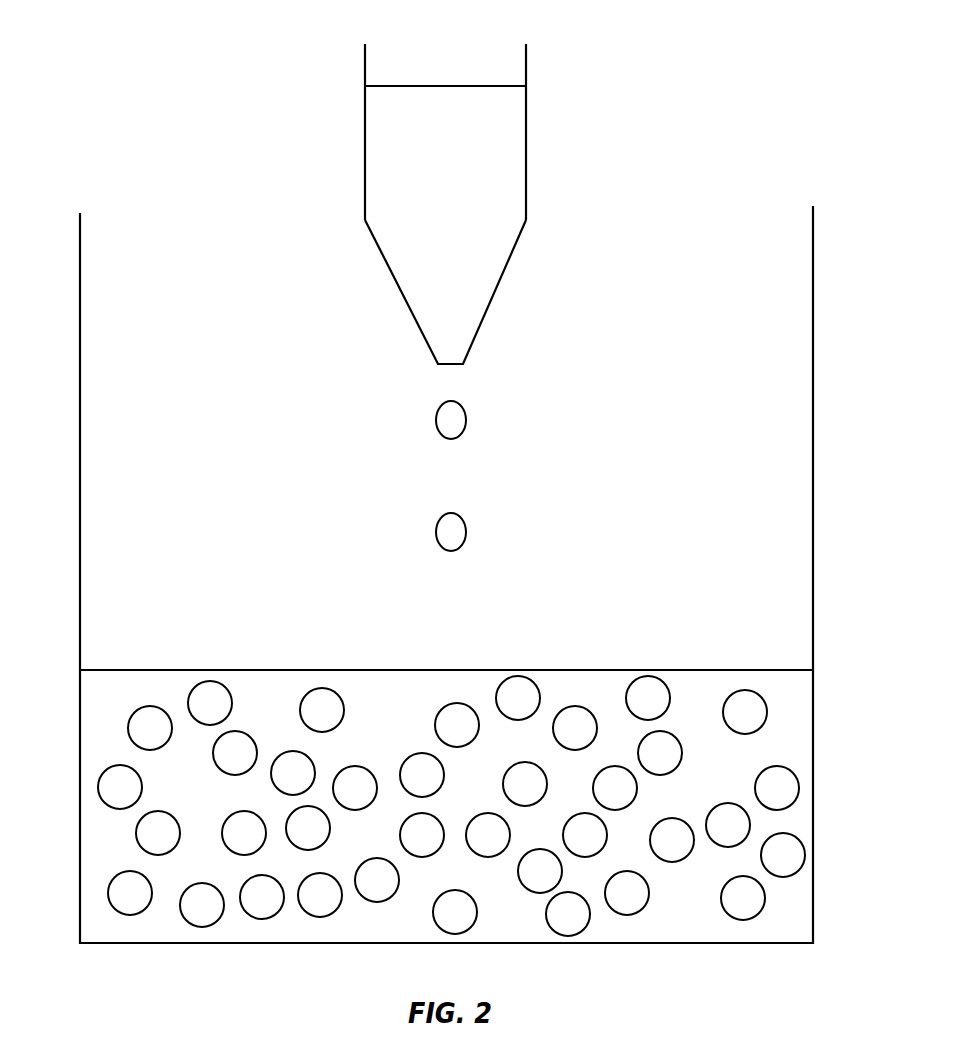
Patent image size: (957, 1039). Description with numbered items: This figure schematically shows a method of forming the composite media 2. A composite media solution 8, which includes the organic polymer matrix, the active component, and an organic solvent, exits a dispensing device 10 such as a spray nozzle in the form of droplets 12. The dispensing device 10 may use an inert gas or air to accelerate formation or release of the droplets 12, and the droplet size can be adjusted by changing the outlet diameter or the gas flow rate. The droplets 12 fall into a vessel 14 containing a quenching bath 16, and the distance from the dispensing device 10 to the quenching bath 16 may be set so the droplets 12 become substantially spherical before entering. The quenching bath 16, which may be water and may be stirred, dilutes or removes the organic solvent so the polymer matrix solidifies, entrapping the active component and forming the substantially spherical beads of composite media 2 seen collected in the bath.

The composite media 2 is at (118, 780).
The composite media solution 8 is at (507, 130).
The dispensing device 10 is at (400, 293).
The droplets 12 is at (453, 419).
The vessel 14 is at (813, 272).
The quenching bath 16 is at (787, 731).